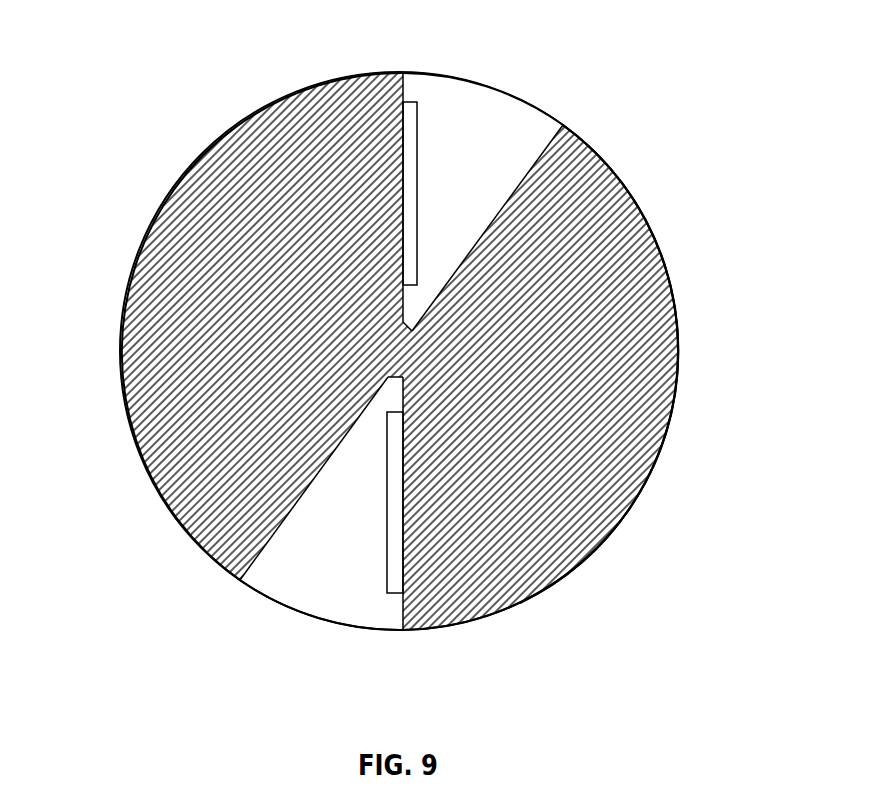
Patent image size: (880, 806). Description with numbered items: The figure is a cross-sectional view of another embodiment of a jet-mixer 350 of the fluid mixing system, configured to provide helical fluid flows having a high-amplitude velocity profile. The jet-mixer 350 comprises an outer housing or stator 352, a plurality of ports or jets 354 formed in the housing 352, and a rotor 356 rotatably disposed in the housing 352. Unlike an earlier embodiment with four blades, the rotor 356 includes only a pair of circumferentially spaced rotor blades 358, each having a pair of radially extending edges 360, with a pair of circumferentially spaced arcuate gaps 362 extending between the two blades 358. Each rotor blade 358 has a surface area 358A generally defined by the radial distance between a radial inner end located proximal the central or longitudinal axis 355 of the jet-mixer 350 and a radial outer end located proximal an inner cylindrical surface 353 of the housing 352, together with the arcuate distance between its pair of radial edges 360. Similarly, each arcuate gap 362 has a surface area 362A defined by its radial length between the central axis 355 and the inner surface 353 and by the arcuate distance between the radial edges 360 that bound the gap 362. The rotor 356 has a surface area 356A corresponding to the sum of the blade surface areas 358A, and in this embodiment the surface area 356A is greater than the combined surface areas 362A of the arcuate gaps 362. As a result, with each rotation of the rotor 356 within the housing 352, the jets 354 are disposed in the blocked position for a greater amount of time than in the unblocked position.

The jet-mixer 350 is at (138, 50).
The outer housing or stator 352 is at (540, 111).
The inner cylindrical surface 353 is at (467, 84).
The ports or jets 354 is at (418, 165).
The central or longitudinal axis 355 is at (413, 327).
The rotor 356 is at (664, 432).
The rotor surface area 356A is at (573, 568).
The rotor blades 358 is at (160, 215).
The rotor blade surface area 358A is at (679, 345).
The radially extending edges 360 is at (405, 78).
The arcuate gaps 362 is at (510, 68).
The arcuate gap surface area 362A is at (330, 619).